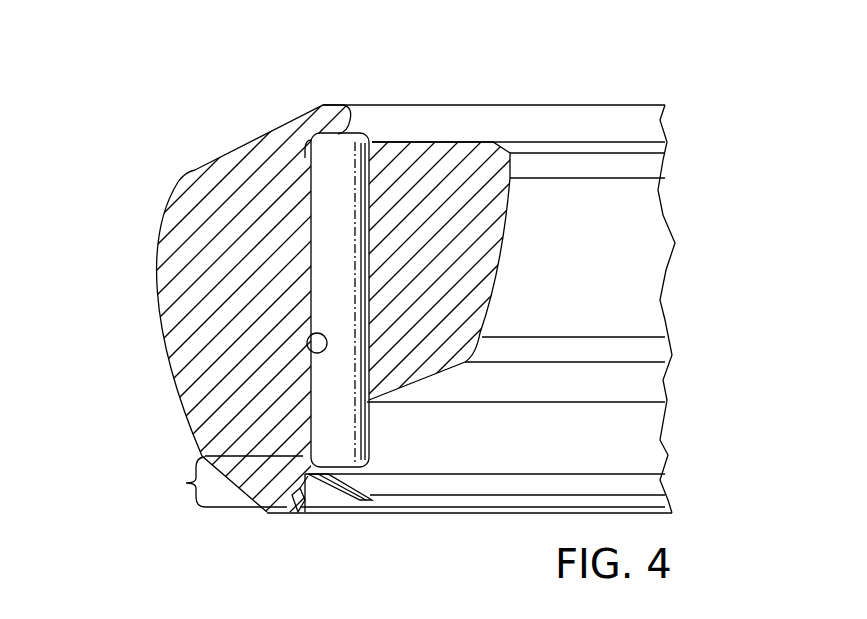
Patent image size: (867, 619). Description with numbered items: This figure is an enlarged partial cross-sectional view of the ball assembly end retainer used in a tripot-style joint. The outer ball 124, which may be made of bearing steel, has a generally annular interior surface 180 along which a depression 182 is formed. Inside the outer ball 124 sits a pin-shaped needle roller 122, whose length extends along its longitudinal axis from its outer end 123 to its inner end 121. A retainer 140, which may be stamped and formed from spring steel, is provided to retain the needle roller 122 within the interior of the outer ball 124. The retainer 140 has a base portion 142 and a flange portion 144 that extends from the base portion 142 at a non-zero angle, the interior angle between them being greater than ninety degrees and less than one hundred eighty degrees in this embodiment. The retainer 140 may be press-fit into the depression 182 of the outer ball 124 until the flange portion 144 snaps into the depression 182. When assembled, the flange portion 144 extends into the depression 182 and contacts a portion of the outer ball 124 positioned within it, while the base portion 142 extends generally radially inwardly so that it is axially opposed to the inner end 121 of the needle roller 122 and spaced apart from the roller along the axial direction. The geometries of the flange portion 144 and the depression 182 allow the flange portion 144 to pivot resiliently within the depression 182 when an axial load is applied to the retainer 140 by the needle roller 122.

The retainer 140 is at (547, 475).
The outer ball 124 is at (172, 216).
The outer end 123 is at (353, 141).
The needle roller 122 is at (372, 144).
The inner end 121 is at (362, 438).
The interior surface 180 is at (310, 356).
The depression 182 is at (221, 481).
The base portion 142 is at (376, 512).
The flange portion 144 is at (300, 512).